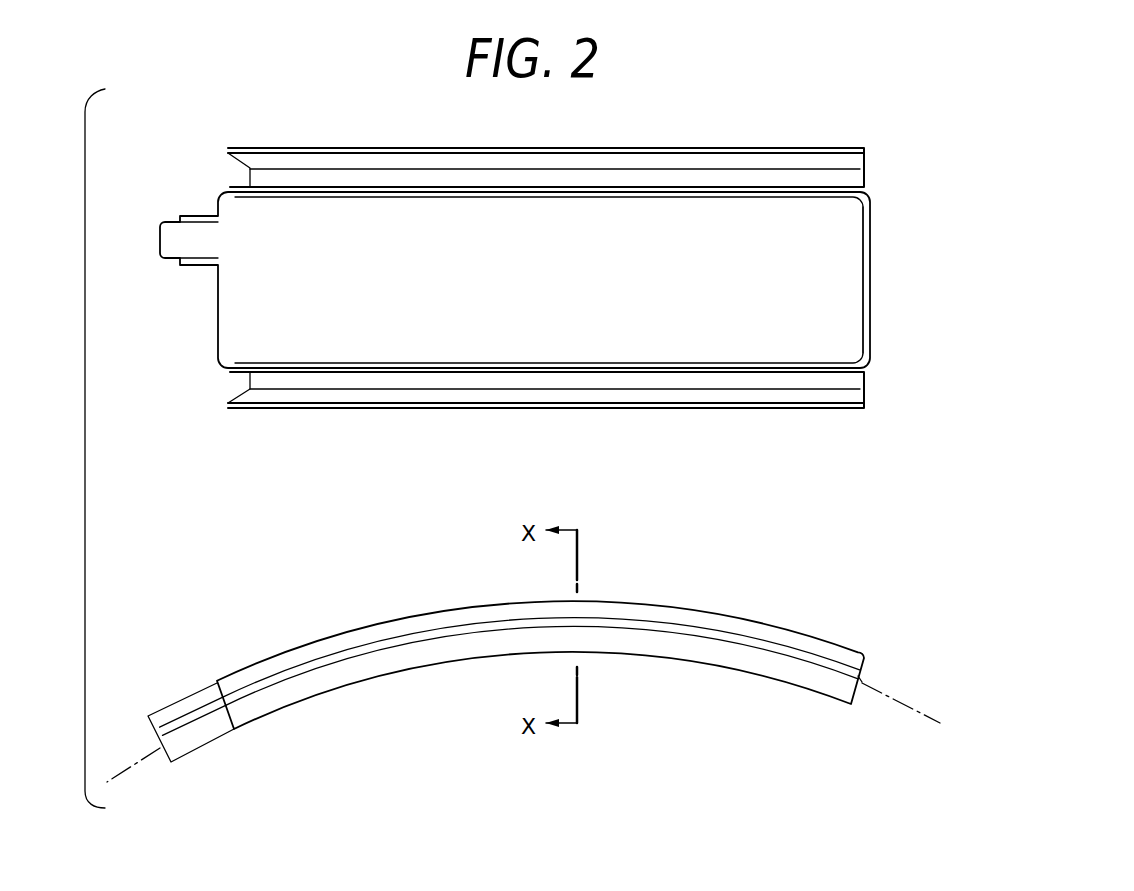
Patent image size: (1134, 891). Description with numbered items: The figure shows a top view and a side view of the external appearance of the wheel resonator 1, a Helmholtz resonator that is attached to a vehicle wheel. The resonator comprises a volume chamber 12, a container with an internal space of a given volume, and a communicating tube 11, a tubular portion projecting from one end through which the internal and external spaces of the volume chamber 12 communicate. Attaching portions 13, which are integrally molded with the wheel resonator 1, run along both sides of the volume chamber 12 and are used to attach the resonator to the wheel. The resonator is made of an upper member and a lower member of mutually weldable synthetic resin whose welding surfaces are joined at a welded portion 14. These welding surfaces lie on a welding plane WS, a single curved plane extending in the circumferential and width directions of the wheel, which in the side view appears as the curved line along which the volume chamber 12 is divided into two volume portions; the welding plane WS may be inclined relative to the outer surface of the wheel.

The wheel resonator 1 is at (588, 806).
The communicating tube 11 is at (193, 245).
The volume chamber 12 is at (804, 254).
The attaching portions 13 is at (683, 146).
The welded portion 14 is at (873, 340).
The welding plane WS is at (918, 705).